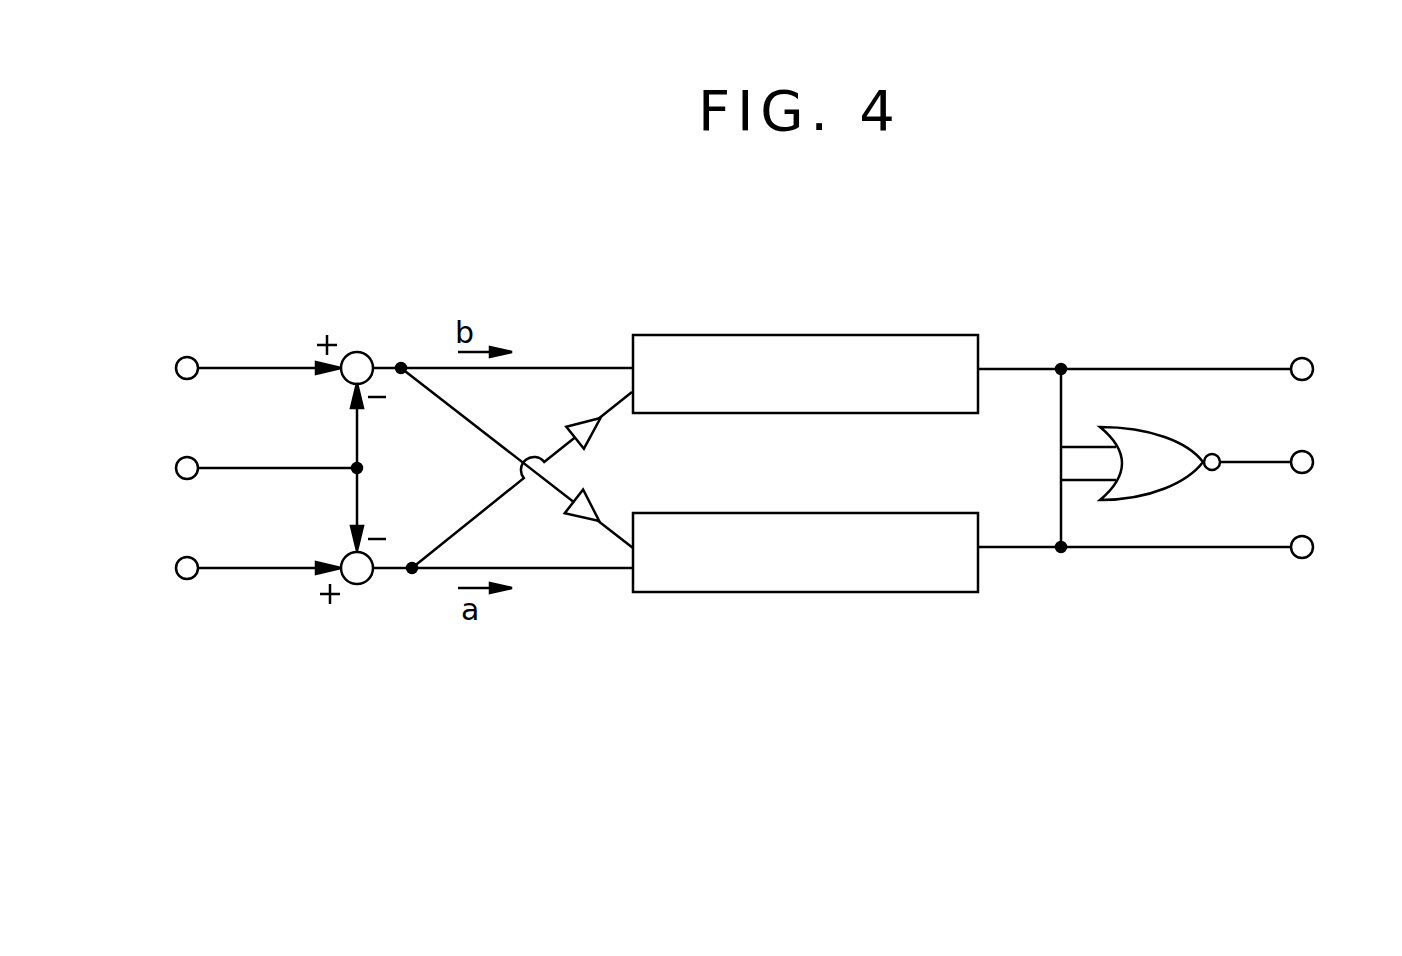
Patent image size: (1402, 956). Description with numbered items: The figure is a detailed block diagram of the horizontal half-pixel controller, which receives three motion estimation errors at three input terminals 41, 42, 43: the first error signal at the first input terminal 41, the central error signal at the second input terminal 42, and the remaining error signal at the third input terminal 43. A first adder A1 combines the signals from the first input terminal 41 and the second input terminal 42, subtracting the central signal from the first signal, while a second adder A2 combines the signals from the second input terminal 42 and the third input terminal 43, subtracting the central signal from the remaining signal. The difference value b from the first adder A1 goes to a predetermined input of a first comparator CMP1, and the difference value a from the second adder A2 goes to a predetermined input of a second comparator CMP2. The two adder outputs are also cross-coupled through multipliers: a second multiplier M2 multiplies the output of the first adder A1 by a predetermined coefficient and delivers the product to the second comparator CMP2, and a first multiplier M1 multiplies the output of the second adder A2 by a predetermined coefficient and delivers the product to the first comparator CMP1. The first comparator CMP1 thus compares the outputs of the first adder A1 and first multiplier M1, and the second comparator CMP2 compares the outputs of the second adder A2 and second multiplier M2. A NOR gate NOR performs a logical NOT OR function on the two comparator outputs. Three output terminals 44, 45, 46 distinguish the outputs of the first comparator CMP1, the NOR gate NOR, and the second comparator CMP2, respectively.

The first input terminal 41 is at (195, 360).
The second input terminal 42 is at (195, 460).
The third input terminal 43 is at (195, 560).
The first output terminal 44 is at (1310, 360).
The second output terminal 45 is at (1310, 454).
The third output terminal 46 is at (1310, 538).
The first adder A1 is at (357, 351).
The second adder A2 is at (353, 584).
The first multiplier M1 is at (522, 479).
The second multiplier M2 is at (523, 458).
The first comparator CMP1 is at (978, 343).
The second comparator CMP2 is at (978, 584).
The NOR gate NOR is at (1192, 442).